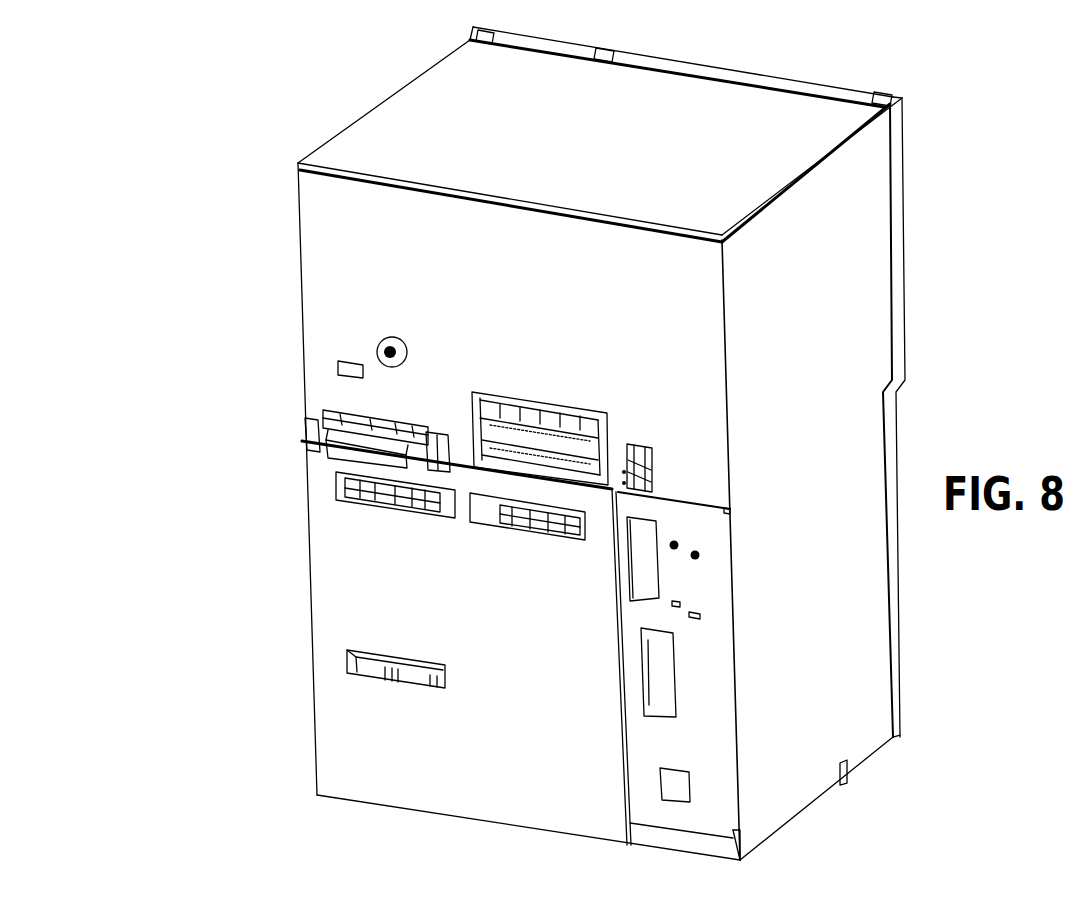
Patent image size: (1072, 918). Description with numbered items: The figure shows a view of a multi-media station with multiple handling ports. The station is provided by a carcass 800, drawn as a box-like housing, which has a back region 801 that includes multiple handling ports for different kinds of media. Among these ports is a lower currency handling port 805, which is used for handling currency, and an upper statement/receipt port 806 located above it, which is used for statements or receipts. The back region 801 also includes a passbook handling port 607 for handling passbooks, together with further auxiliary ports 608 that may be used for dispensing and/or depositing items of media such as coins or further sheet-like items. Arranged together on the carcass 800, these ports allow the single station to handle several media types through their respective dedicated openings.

The carcass 800 is at (322, 278).
The back region 801 is at (253, 366).
The lower currency handling port 805 is at (365, 503).
The upper statement/receipt port 806 is at (320, 442).
The passbook handling port 607 is at (555, 422).
The auxiliary ports 608 is at (530, 532).